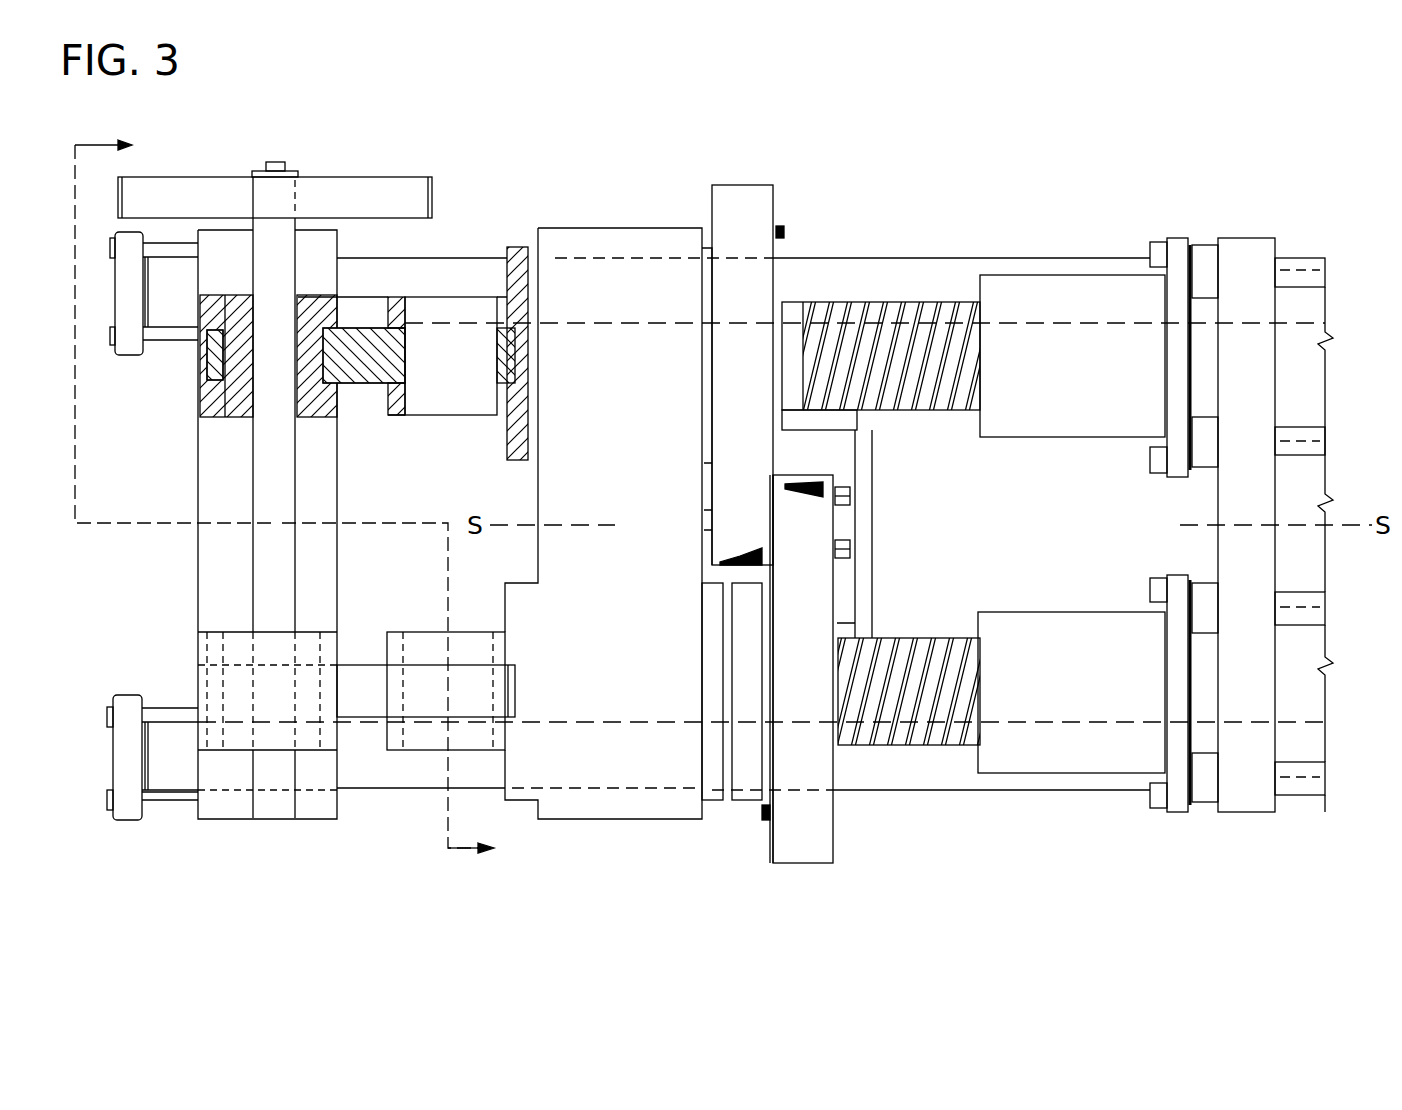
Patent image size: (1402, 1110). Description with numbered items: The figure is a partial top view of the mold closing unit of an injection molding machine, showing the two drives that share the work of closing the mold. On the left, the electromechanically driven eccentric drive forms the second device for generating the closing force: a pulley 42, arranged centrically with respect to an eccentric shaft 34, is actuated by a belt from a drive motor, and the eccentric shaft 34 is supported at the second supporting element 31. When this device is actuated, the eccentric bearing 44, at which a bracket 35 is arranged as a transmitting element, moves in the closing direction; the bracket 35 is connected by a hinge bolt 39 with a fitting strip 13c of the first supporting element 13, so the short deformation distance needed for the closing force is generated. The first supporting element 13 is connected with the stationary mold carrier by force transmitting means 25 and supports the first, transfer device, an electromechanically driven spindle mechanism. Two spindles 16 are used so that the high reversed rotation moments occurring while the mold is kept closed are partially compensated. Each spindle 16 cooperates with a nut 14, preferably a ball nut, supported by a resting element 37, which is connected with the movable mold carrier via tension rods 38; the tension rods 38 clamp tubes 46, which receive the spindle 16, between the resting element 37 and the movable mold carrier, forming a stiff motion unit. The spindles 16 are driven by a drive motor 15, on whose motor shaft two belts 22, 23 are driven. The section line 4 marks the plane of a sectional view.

The section line 4- 4 is at (283, 501).
The first supporting element 13 is at (603, 596).
The fitting strip 13c is at (400, 300).
The nut 14 is at (1053, 388).
The drive motor 15 is at (1024, 544).
The spindle 16 is at (873, 352).
The belt 22 is at (746, 218).
The belt 23 is at (808, 835).
The force transmitting means 25 is at (463, 277).
The second supporting element 31 is at (227, 585).
The eccentric shaft 34 is at (270, 497).
The bracket 35 is at (200, 370).
The resting element 37 is at (1233, 553).
The tension rods 38 is at (1303, 267).
The hinge bolt 39 is at (432, 386).
The pulley 42 is at (392, 198).
The eccentric bearing 44 is at (237, 330).
The tubes 46 is at (1307, 377).